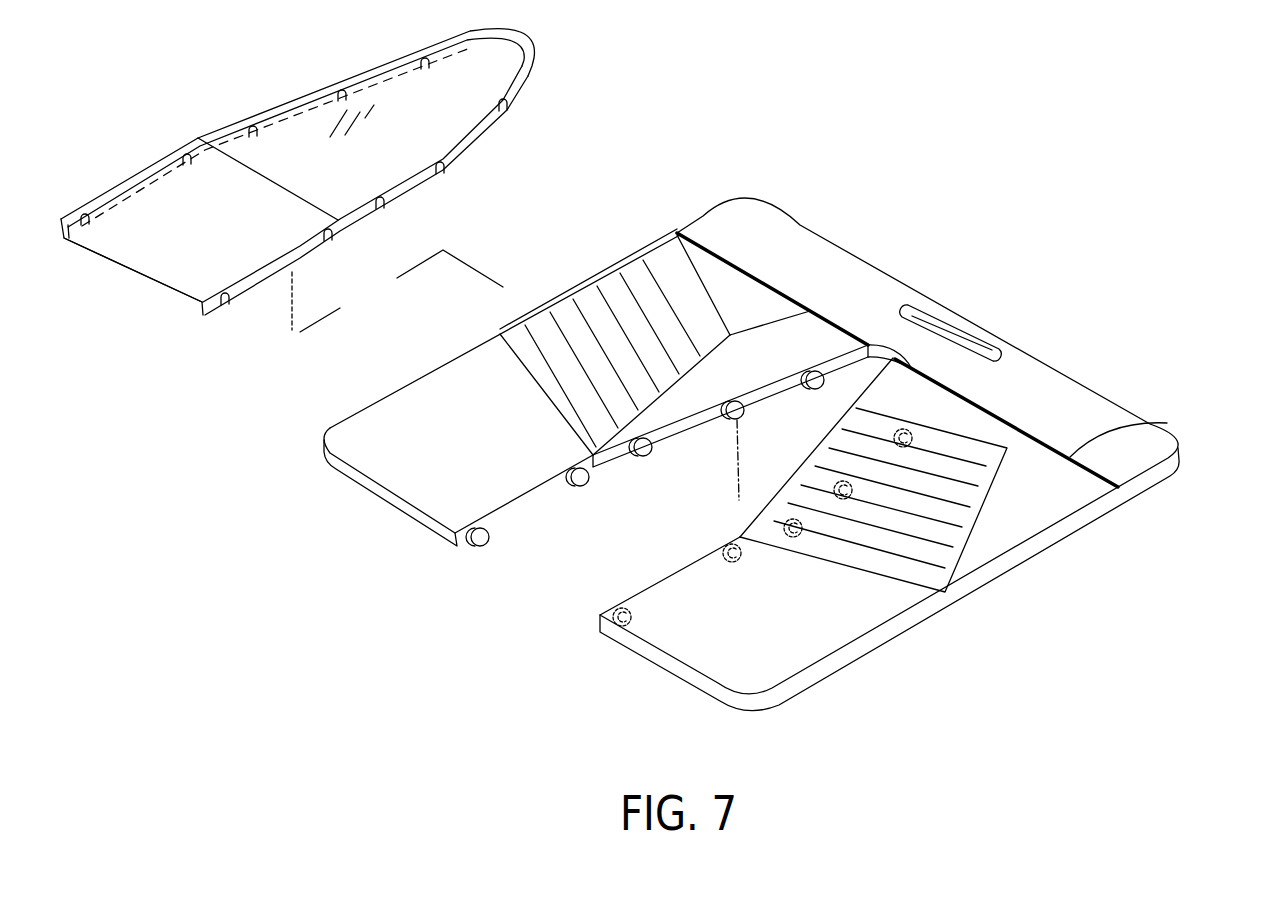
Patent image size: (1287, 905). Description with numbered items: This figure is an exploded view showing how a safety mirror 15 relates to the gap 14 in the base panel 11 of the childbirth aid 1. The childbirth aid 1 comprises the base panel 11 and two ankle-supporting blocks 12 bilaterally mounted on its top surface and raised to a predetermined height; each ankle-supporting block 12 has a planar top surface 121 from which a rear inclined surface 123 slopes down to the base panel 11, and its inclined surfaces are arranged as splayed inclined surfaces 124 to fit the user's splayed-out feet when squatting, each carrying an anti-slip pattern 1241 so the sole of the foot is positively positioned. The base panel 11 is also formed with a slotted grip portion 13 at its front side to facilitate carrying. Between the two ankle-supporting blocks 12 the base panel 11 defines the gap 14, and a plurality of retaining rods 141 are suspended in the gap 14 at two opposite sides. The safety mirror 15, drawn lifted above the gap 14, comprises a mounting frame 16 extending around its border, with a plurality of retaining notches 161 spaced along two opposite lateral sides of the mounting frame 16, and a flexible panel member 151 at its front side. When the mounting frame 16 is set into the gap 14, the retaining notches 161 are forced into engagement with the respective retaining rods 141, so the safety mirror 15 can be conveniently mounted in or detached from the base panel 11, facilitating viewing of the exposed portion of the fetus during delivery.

The childbirth aid 1 is at (1098, 322).
The base panel 11 is at (852, 268).
The ankle-supporting block 12 is at (652, 243).
The planar top surface 121 is at (700, 262).
The rear inclined surface 123 is at (773, 283).
The splayed inclined surface 124 is at (630, 280).
The anti-slip pattern 1241 is at (620, 352).
The slotted grip portion 13 is at (953, 333).
The gap 14 is at (598, 543).
The retaining rod 141 is at (713, 547).
The safety mirror 15 is at (530, 53).
The flexible panel member 151 is at (228, 183).
The mounting frame 16 is at (530, 83).
The retaining notch 161 is at (503, 100).